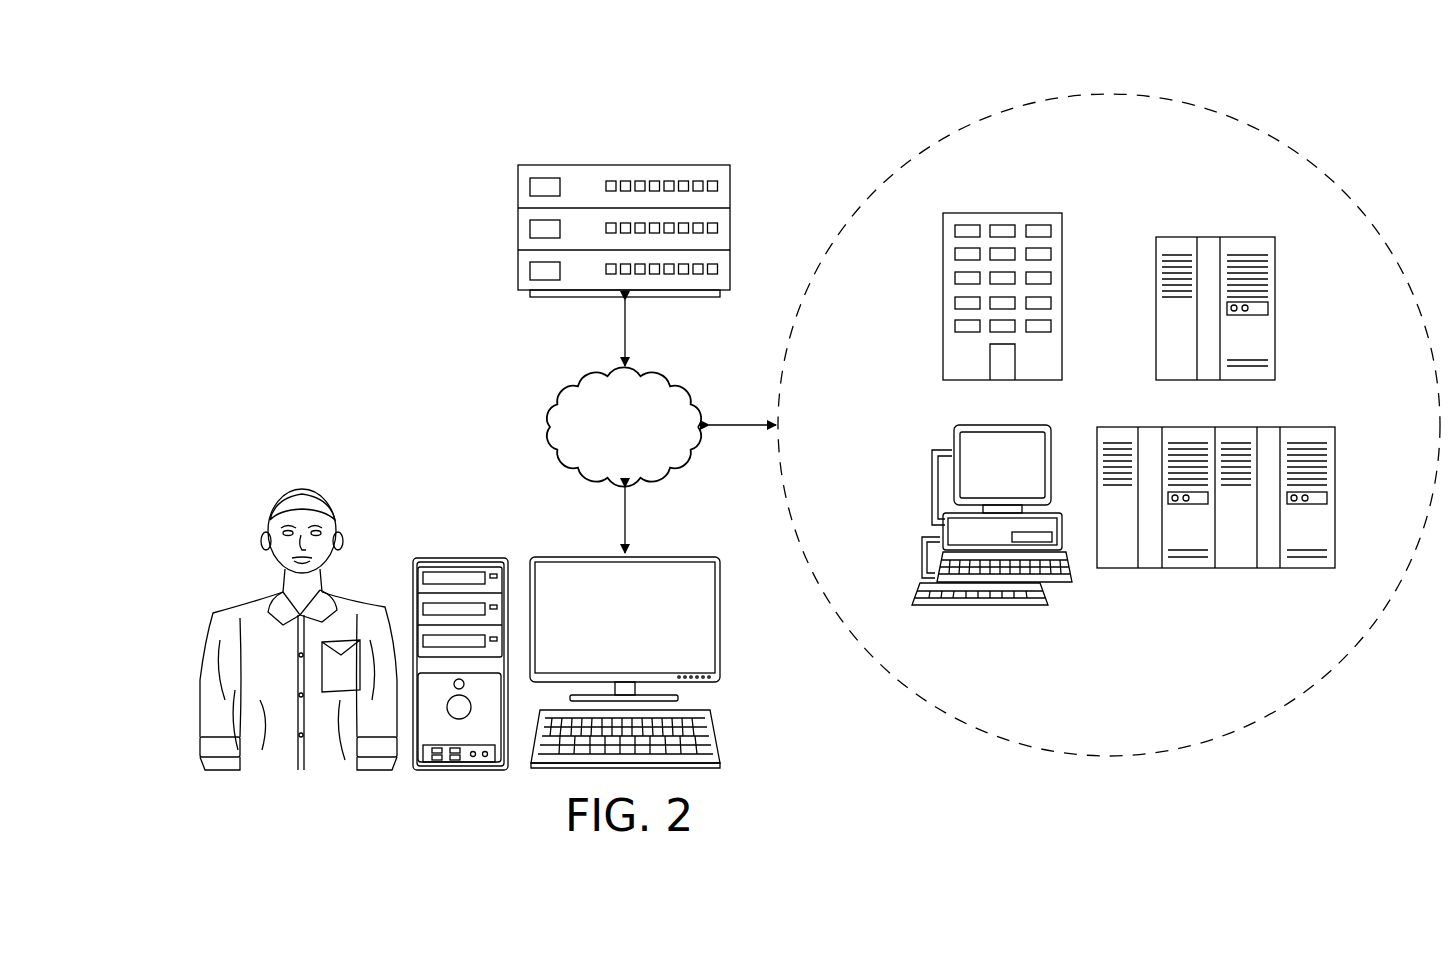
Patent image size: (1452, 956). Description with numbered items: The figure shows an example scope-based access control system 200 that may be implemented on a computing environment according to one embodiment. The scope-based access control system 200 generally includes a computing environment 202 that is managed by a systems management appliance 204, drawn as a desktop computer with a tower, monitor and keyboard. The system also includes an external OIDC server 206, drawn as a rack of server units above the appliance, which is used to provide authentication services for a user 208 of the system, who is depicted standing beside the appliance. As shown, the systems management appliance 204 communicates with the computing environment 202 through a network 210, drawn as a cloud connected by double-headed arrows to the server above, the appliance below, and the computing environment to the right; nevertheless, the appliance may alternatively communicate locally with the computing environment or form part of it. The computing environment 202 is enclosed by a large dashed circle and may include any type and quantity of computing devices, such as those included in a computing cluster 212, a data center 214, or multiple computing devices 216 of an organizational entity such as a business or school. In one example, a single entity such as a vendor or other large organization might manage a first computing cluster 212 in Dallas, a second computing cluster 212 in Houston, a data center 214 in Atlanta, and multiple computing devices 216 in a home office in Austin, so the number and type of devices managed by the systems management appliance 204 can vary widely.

The scope-based access control system 200 is at (337, 137).
The computing environment 202 is at (1198, 104).
The systems management appliance 204 is at (567, 556).
The external OIDC server 206 is at (608, 165).
The user 208 is at (205, 667).
The network 210 is at (648, 443).
The computing cluster 212 is at (1275, 308).
The data center 214 is at (943, 297).
The multiple computing devices 216 is at (1026, 483).